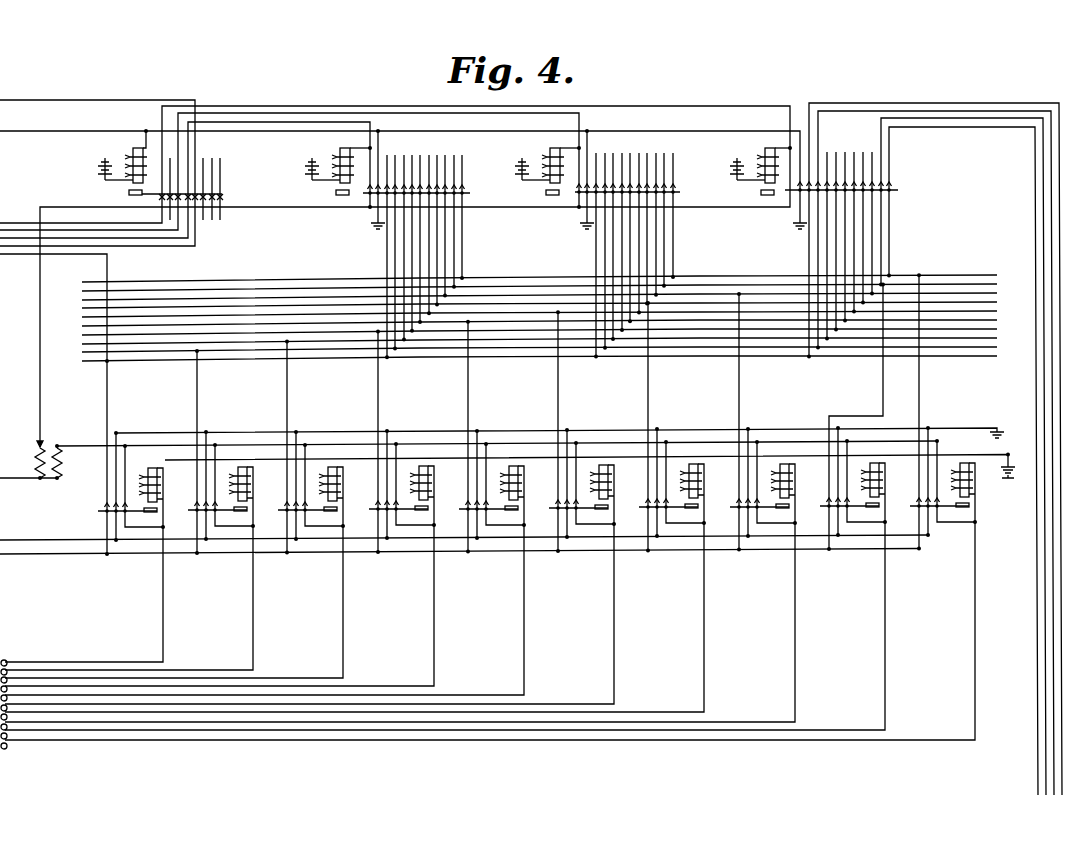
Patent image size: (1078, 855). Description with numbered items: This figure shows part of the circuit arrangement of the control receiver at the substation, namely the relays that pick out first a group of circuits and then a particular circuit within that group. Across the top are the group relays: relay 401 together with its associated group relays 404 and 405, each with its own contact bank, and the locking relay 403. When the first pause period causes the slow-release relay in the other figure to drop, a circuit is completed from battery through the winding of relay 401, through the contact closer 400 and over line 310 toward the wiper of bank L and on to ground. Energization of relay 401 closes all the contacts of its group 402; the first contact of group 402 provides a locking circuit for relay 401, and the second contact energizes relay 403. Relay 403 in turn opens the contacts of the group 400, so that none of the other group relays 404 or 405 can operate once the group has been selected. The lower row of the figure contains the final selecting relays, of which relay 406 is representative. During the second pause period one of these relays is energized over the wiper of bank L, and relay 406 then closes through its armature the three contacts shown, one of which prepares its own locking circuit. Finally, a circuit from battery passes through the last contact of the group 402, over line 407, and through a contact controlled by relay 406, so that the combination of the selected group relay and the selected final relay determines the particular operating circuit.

The line 310 is at (22, 223).
The contact closer 400 is at (206, 189).
The relay 401 is at (766, 154).
The contact group 402 is at (923, 449).
The relay 403 is at (134, 154).
The group relay 404 is at (340, 154).
The group relay 405 is at (550, 154).
The relay 406 is at (969, 492).
The line 407 is at (919, 407).